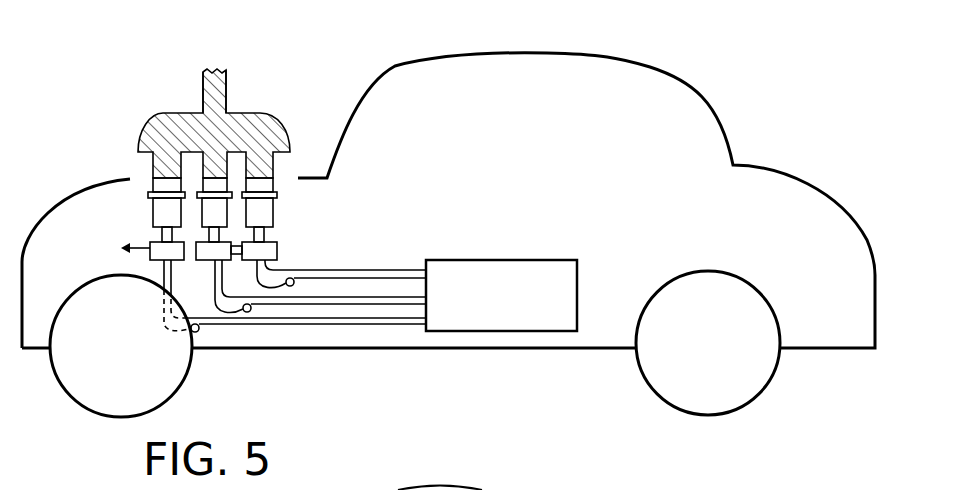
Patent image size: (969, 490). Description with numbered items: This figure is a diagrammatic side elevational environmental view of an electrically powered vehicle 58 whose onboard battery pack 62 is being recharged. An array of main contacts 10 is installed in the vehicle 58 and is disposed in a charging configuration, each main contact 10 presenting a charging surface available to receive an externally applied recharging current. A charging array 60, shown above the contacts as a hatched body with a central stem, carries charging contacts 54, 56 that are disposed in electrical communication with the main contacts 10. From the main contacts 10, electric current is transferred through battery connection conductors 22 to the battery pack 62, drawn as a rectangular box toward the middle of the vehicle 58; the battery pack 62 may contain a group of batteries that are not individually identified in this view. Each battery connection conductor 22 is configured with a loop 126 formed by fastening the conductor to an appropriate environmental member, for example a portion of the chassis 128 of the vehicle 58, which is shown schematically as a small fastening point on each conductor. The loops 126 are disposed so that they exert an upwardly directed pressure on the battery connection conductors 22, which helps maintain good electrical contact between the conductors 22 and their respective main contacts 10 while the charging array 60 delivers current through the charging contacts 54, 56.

The main contact 10 is at (165, 188).
The battery connection conductor 22 is at (342, 273).
The charging contact 54 is at (152, 166).
The charging contact 56 is at (273, 167).
The electrically powered vehicle 58 is at (556, 128).
The charging array 60 is at (270, 103).
The battery pack 62 is at (530, 259).
The loop 126 is at (306, 288).
The chassis portion 128 is at (291, 277).